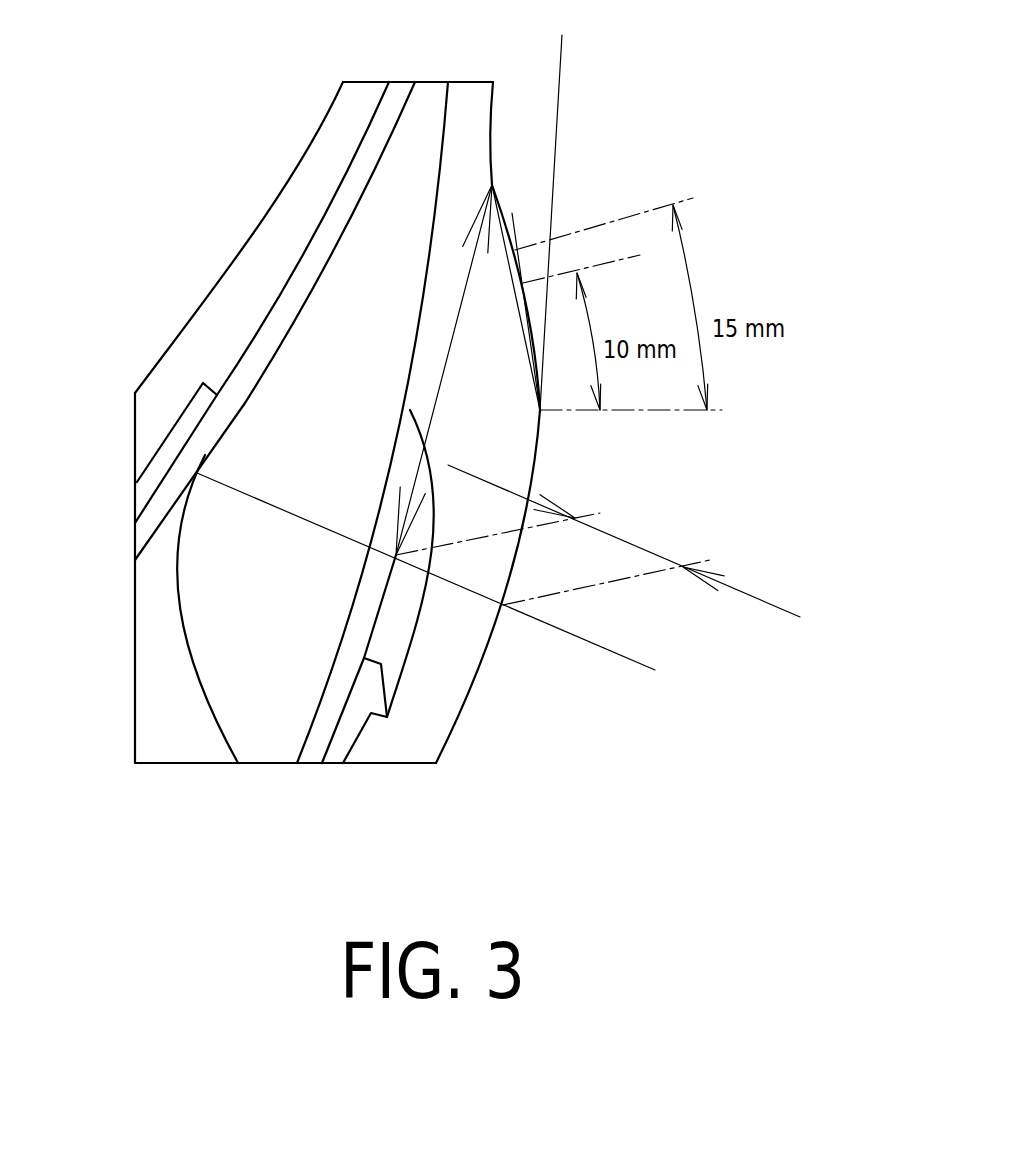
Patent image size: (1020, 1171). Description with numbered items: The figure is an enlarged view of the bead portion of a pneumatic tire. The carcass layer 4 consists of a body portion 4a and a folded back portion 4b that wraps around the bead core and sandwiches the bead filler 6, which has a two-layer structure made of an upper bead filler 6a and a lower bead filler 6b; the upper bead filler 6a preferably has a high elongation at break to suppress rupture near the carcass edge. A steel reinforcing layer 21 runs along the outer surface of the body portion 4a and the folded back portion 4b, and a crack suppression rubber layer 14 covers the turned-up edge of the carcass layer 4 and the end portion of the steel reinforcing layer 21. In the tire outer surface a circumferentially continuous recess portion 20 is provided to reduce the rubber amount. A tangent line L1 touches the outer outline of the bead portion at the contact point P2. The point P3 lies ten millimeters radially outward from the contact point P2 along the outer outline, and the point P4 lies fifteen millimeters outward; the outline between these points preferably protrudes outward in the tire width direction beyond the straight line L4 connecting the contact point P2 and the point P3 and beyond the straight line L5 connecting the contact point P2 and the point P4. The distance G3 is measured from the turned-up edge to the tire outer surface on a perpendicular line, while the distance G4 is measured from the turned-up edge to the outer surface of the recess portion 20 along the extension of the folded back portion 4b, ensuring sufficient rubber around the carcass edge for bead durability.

The recess portion 20 is at (492, 118).
The steel reinforcing layer 21 is at (185, 425).
The carcass layer 4 is at (287, 456).
The body portion 4a is at (300, 287).
The folded back portion 4b is at (315, 740).
The bead filler 6 is at (272, 624).
The upper bead filler 6a is at (255, 733).
The lower bead filler 6b is at (167, 748).
The crack suppression rubber layer 14 is at (402, 623).
The tangent line L1 is at (556, 209).
The straight line L4 is at (515, 230).
The straight line L5 is at (503, 213).
The contact point P2 is at (542, 413).
The point P3 is at (523, 285).
The point P4 is at (502, 258).
The distance G3 is at (498, 567).
The distance G4 is at (444, 370).